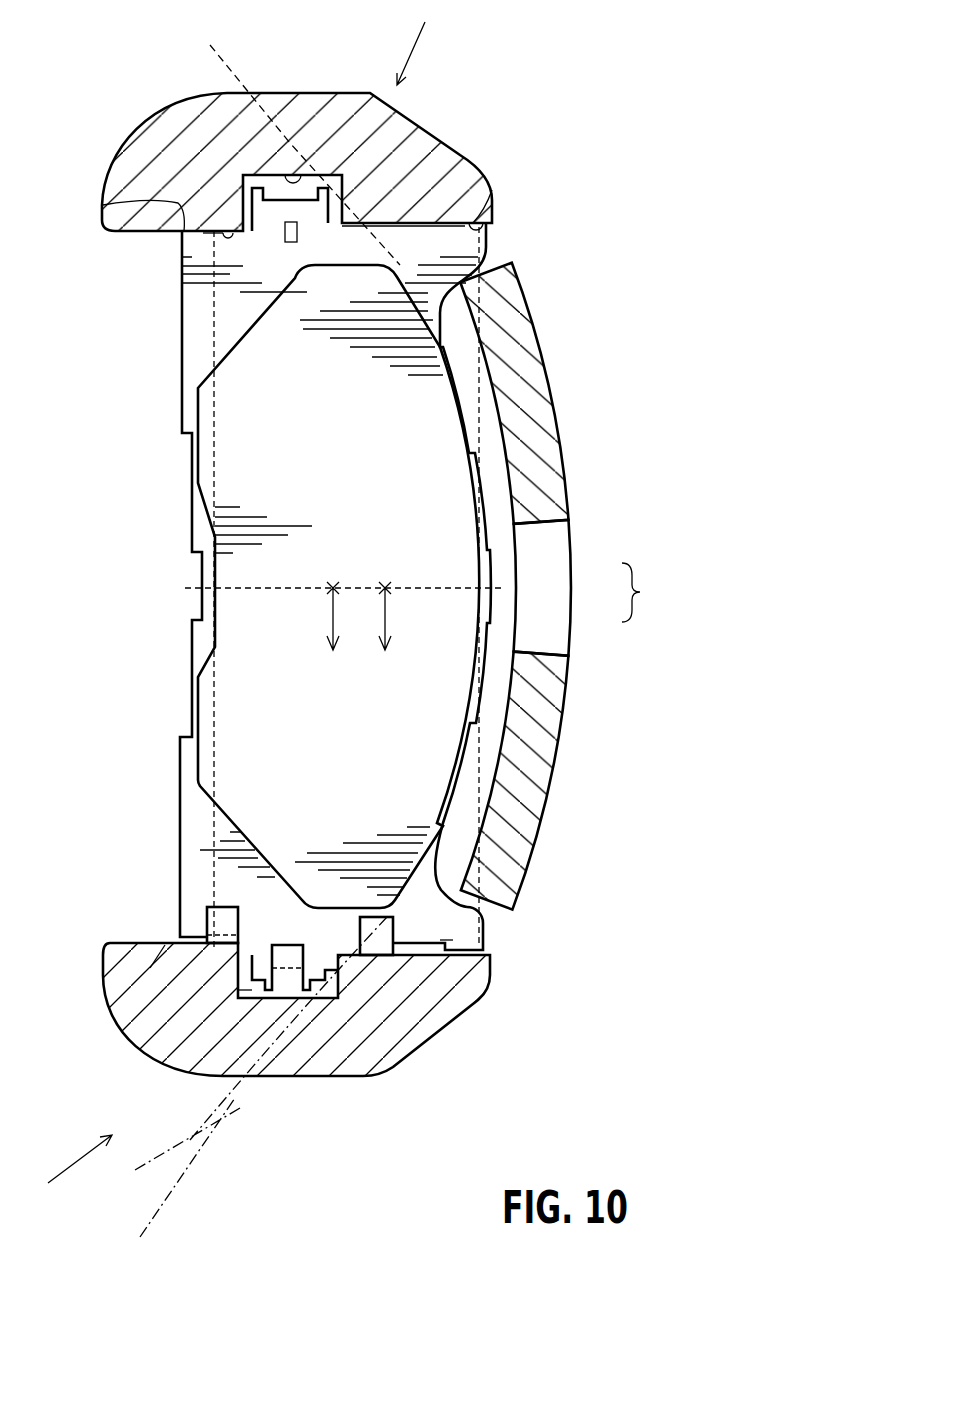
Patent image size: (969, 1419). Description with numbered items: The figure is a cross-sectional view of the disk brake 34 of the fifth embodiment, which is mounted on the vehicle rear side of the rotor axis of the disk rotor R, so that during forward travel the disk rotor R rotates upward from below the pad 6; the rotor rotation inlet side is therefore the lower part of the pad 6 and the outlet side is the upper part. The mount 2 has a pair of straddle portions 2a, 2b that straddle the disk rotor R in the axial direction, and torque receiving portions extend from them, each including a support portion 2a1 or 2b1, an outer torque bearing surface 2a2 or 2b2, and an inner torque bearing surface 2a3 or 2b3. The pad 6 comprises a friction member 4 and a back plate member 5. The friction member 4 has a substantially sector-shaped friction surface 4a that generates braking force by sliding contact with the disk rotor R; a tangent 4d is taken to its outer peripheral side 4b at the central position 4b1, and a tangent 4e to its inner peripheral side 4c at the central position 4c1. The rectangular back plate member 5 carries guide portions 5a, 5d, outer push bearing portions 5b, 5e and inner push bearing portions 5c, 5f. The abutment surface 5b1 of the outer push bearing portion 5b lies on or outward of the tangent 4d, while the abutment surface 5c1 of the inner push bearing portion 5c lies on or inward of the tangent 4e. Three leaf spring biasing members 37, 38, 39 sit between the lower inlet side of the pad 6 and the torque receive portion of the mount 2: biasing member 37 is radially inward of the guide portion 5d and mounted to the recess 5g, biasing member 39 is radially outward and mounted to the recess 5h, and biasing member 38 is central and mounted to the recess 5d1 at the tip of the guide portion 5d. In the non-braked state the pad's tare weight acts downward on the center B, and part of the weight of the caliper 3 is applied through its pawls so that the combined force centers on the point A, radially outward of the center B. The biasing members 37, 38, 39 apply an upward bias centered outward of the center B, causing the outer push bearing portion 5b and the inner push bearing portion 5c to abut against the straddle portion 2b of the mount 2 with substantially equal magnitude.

The mount 2 is at (314, 613).
The straddle portion 2a is at (462, 187).
The support portion 2a1 is at (298, 175).
The outer torque bearing surface 2a2 is at (400, 217).
The inner torque bearing surface 2a3 is at (233, 230).
The straddle portion 2b is at (470, 983).
The support portion 2b1 is at (243, 990).
The outer torque bearing surface 2b2 is at (437, 940).
The inner torque bearing surface 2b3 is at (150, 968).
The caliper 3 is at (557, 586).
The friction member 4 is at (373, 582).
The friction surface 4a is at (237, 743).
The outer peripheral side 4b is at (538, 452).
The central position 4b1 is at (545, 663).
The inner peripheral side 4c is at (202, 673).
The central position 4c1 is at (217, 587).
The tangent 4d is at (479, 752).
The tangent 4e is at (213, 813).
The back plate member 5 is at (327, 661).
The guide portion 5a is at (268, 224).
The outer push bearing portion 5b is at (490, 228).
The abutment surface 5b1 is at (491, 192).
The inner push bearing portion 5c is at (180, 235).
The abutment surface 5c1 is at (110, 209).
The guide portion 5d is at (262, 958).
The recess 5d1 is at (282, 970).
The outer push bearing portion 5e is at (470, 944).
The inner push bearing portion 5f is at (192, 937).
The recess 5g is at (228, 943).
The recess 5h is at (402, 943).
The pad 6 is at (349, 661).
The disk brake 34 is at (412, 42).
The biasing member 37 is at (150, 978).
The biasing member 38 is at (290, 987).
The biasing member 39 is at (382, 940).
The point A is at (399, 601).
The center B is at (319, 601).
The disk rotor R is at (258, 1097).